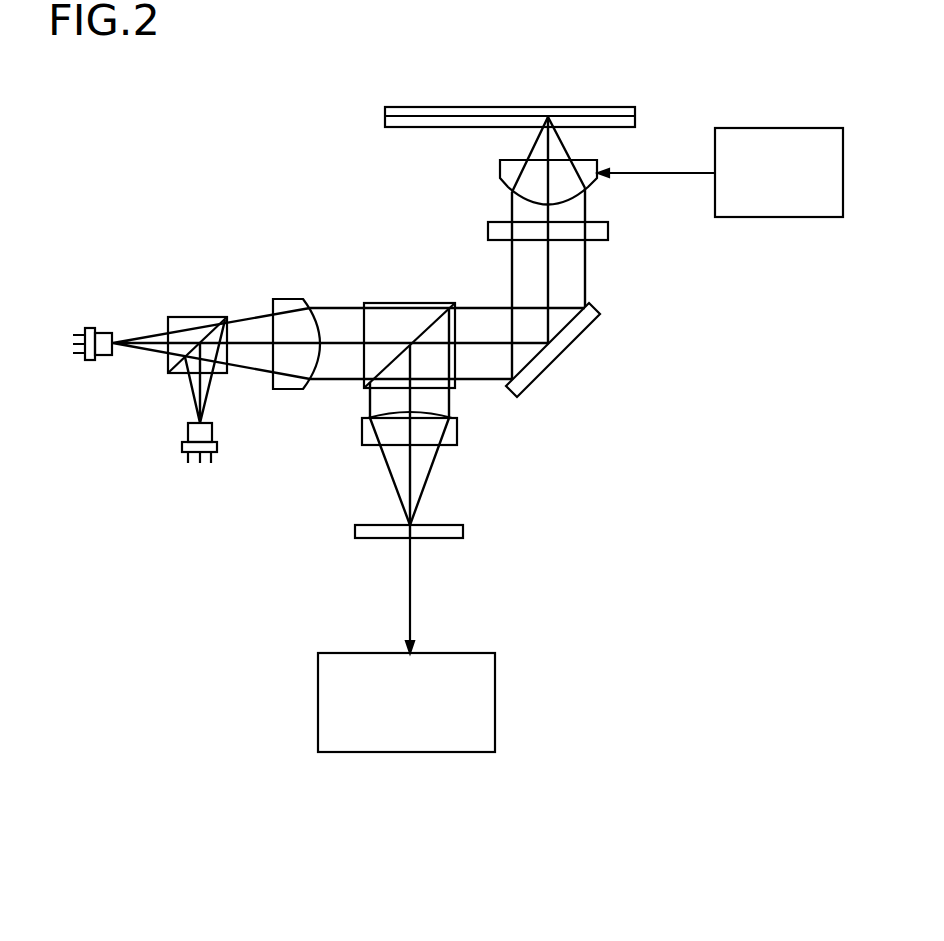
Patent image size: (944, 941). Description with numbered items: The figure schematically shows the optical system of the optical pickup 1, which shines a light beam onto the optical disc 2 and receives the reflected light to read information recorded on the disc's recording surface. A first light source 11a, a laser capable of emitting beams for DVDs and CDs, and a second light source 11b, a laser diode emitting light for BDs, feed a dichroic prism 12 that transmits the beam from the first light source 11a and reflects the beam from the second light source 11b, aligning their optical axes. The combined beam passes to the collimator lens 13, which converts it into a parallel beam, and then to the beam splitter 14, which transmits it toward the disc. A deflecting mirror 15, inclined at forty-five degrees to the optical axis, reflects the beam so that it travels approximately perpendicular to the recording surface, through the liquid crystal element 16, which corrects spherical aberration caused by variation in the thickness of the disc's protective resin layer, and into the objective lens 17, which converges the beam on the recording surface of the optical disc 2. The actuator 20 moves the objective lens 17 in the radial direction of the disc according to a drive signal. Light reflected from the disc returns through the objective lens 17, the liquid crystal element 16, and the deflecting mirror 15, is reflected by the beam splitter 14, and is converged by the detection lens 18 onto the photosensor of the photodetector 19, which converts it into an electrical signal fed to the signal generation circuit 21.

The optical pickup 1 is at (297, 203).
The optical disc 2 is at (613, 128).
The first light source 11a is at (90, 328).
The second light source 11b is at (217, 450).
The dichroic prism 12 is at (202, 316).
The collimator lens 13 is at (293, 300).
The beam splitter 14 is at (412, 301).
The deflecting mirror 15 is at (552, 360).
The liquid crystal element 16 is at (598, 241).
The objective lens 17 is at (597, 183).
The detection lens 18 is at (455, 446).
The photodetector 19 is at (452, 540).
The actuator 20 is at (805, 218).
The signal generation circuit 21 is at (453, 753).